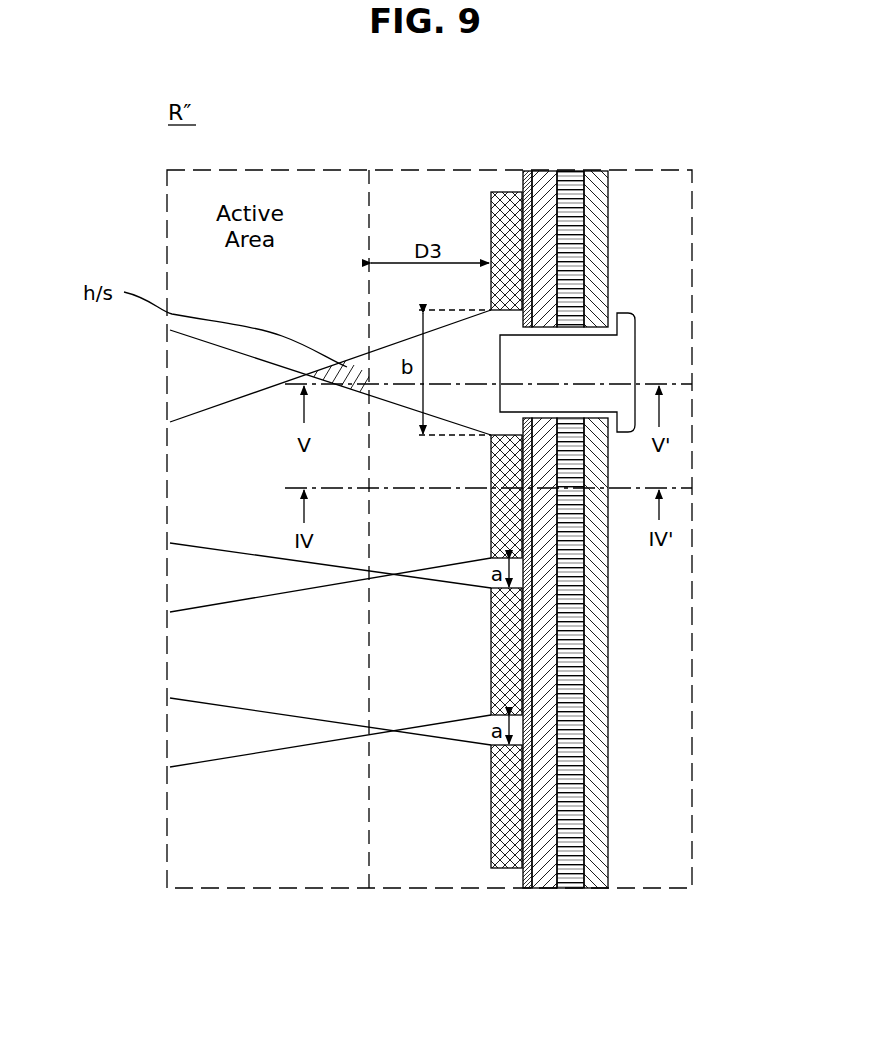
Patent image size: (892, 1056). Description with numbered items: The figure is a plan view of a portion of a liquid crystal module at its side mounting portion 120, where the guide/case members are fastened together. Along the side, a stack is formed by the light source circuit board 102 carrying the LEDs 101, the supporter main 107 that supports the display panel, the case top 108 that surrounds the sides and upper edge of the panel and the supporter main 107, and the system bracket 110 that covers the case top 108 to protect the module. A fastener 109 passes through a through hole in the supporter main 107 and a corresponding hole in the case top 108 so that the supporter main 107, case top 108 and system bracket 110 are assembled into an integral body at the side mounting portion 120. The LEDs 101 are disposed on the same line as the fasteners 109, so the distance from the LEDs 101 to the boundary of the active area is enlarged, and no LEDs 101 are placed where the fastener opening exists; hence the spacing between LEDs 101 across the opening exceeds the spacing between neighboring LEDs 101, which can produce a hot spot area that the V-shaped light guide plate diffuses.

The LEDs 101 is at (503, 198).
The light source circuit board 102 is at (527, 171).
The supporter main 107 is at (542, 180).
The case top 108 is at (568, 182).
The fastener 109 is at (620, 360).
The system bracket 110 is at (598, 176).
The side mounting portion 120 is at (664, 321).